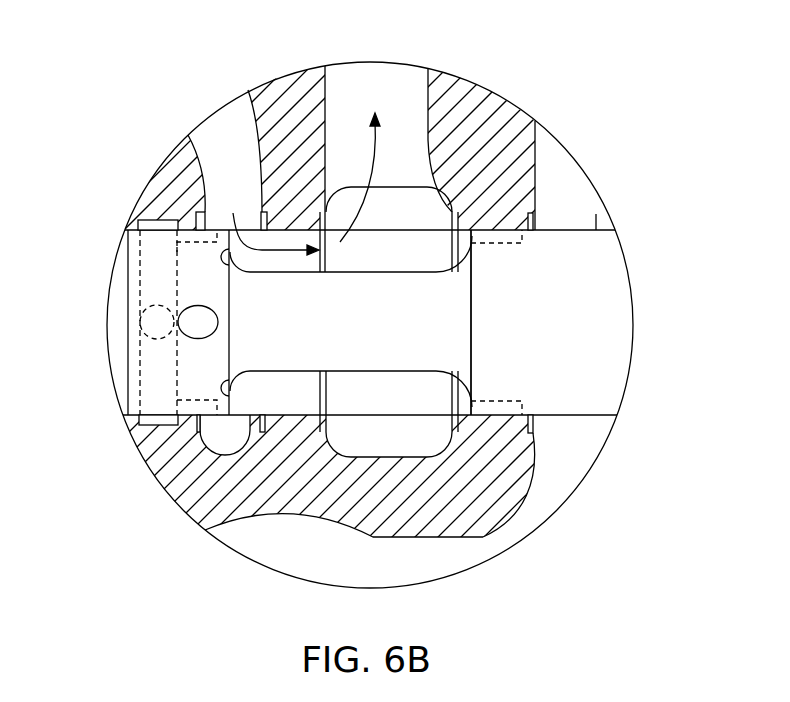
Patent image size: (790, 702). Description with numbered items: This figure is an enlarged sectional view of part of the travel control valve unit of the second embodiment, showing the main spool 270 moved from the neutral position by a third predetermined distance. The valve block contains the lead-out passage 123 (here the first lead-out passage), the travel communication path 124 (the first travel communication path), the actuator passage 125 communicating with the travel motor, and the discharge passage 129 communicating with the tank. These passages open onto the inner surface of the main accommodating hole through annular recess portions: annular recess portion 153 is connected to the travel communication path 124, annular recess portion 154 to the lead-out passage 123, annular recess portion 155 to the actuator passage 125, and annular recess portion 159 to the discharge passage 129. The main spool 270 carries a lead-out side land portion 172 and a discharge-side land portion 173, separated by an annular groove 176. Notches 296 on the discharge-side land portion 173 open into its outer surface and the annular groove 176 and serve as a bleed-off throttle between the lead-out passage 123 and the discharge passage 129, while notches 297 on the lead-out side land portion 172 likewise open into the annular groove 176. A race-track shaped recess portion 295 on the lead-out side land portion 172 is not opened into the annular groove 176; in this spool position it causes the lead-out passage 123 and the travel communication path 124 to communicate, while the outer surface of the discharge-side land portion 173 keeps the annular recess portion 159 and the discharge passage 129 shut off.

The lead-out passage 123 is at (190, 155).
The travel communication path 124 is at (145, 332).
The actuator passage 125 is at (430, 70).
The discharge passage 129 is at (535, 123).
The annular recess portion 153 is at (143, 421).
The annular recess portion 154 is at (195, 135).
The annular recess portion 155 is at (247, 443).
The annular recess portion 159 is at (522, 428).
The lead-out side land portion 172 is at (140, 367).
The discharge-side land portion 173 is at (610, 258).
The annular groove 176 is at (395, 372).
The main spool 270 is at (598, 230).
The recess portion 295 is at (177, 252).
The notch 296 is at (510, 245).
The notch 297 is at (224, 230).